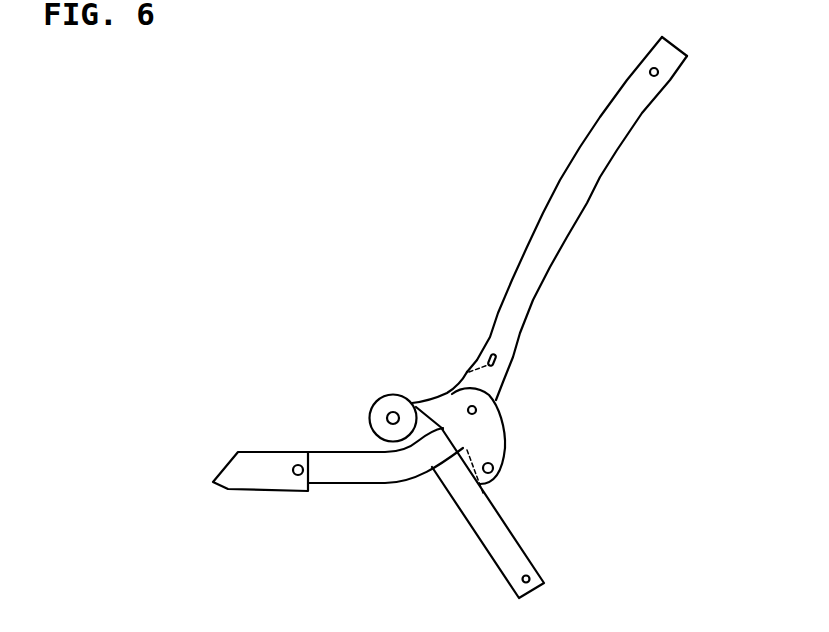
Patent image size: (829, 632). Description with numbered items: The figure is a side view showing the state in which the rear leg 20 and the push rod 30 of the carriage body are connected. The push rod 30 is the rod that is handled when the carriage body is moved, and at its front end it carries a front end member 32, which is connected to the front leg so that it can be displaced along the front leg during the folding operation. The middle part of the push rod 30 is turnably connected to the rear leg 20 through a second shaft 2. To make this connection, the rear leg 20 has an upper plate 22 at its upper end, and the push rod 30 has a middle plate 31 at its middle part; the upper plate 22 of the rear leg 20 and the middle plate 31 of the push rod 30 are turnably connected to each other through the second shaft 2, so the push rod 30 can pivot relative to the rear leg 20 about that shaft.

The second shaft 2 is at (476, 411).
The rear leg 20 is at (497, 542).
The upper plate 22 is at (443, 406).
The push rod 30 is at (590, 167).
The middle plate 31 is at (490, 451).
The front end member 32 is at (267, 478).